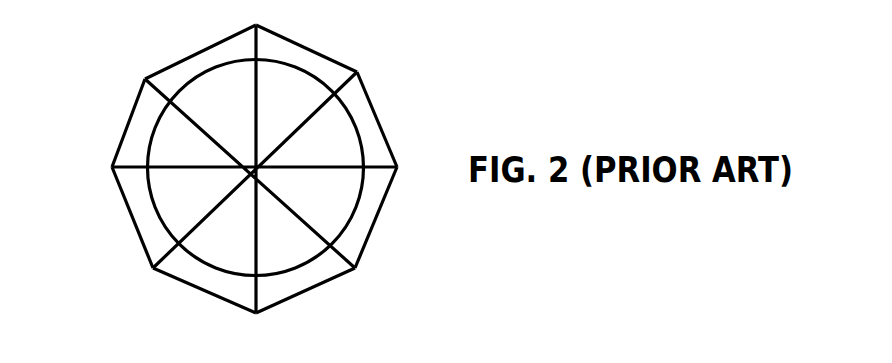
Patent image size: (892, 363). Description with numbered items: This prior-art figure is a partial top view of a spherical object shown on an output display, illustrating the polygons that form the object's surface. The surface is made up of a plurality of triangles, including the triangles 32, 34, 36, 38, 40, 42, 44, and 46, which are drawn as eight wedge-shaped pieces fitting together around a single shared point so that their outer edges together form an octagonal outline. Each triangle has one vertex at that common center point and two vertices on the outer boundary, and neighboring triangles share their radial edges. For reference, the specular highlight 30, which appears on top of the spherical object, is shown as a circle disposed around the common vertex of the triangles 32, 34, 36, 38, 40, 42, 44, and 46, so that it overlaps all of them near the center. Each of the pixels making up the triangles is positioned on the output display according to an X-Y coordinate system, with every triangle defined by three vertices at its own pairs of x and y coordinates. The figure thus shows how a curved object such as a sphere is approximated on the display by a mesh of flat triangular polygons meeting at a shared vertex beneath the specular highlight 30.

The specular highlight 30 is at (350, 115).
The triangle 32 is at (317, 290).
The triangle 34 is at (377, 223).
The triangle 36 is at (385, 133).
The triangle 38 is at (300, 43).
The triangle 40 is at (218, 38).
The triangle 42 is at (118, 142).
The triangle 44 is at (130, 218).
The triangle 46 is at (200, 295).